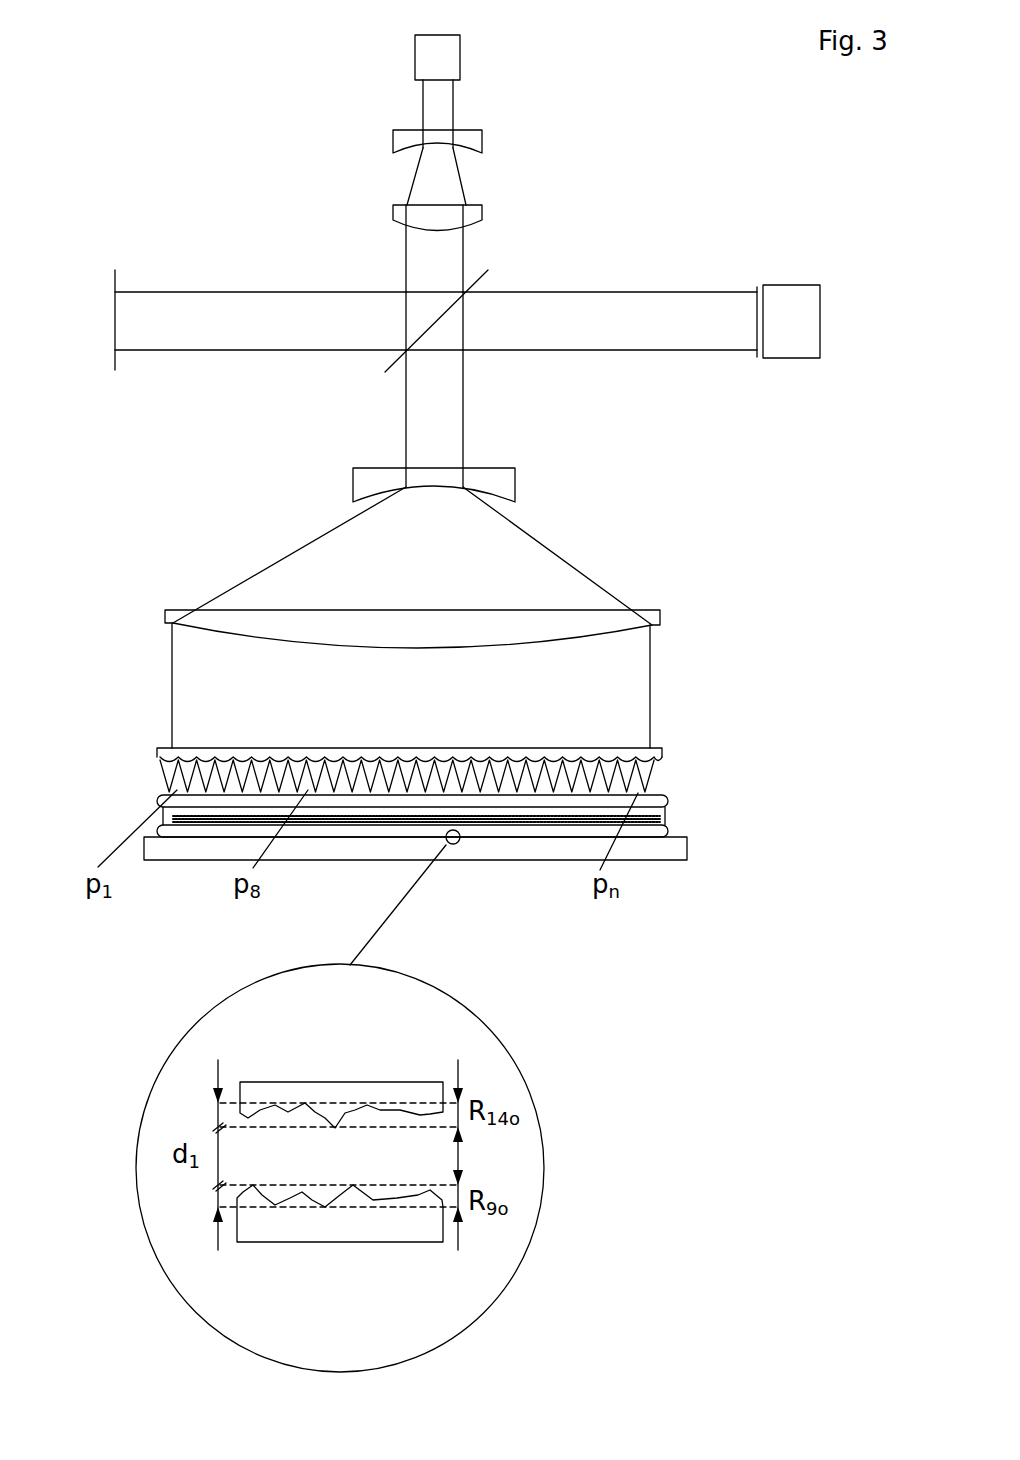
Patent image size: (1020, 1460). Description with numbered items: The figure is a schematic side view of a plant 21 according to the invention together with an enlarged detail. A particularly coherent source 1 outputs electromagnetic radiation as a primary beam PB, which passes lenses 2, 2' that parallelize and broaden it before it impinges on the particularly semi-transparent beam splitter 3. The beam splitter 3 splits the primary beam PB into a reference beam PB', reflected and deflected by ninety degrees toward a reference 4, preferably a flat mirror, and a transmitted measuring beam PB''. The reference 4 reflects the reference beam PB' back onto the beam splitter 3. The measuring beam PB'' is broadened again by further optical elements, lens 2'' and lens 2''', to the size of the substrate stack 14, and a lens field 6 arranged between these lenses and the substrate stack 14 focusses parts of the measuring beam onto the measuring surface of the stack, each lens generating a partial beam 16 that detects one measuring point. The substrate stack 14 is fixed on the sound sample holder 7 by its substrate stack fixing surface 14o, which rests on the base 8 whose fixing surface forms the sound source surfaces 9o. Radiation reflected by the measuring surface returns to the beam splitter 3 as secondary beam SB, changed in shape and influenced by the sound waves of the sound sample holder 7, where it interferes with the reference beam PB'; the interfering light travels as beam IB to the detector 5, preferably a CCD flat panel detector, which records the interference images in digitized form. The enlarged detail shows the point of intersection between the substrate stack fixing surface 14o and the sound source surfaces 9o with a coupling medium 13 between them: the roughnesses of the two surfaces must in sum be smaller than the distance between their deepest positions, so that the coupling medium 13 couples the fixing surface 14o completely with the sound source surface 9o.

The source 1 is at (432, 55).
The lens 2 is at (467, 119).
The lens 2' is at (473, 197).
The lens 2'' is at (473, 468).
The lens 2''' is at (453, 607).
The beam splitter 3 is at (478, 282).
The reference 4 is at (113, 300).
The detector 5 is at (805, 310).
The lens field 6 is at (662, 754).
The sound sample holder 7 is at (697, 852).
The sound source 8 is at (673, 850).
The gap / spacing layer 13 is at (642, 837).
The substrate stack 14 is at (148, 810).
The partial beam 16 is at (637, 775).
The plant 21 is at (258, 170).
The substrate stack fixing surface 14o is at (385, 1098).
The sound source surfaces 9o is at (385, 1222).
The primary beam PB is at (389, 283).
The reference beam PB' is at (260, 285).
The measuring beam PB'' is at (370, 407).
The secondary beam SB is at (445, 388).
The illumination beam IB is at (705, 317).